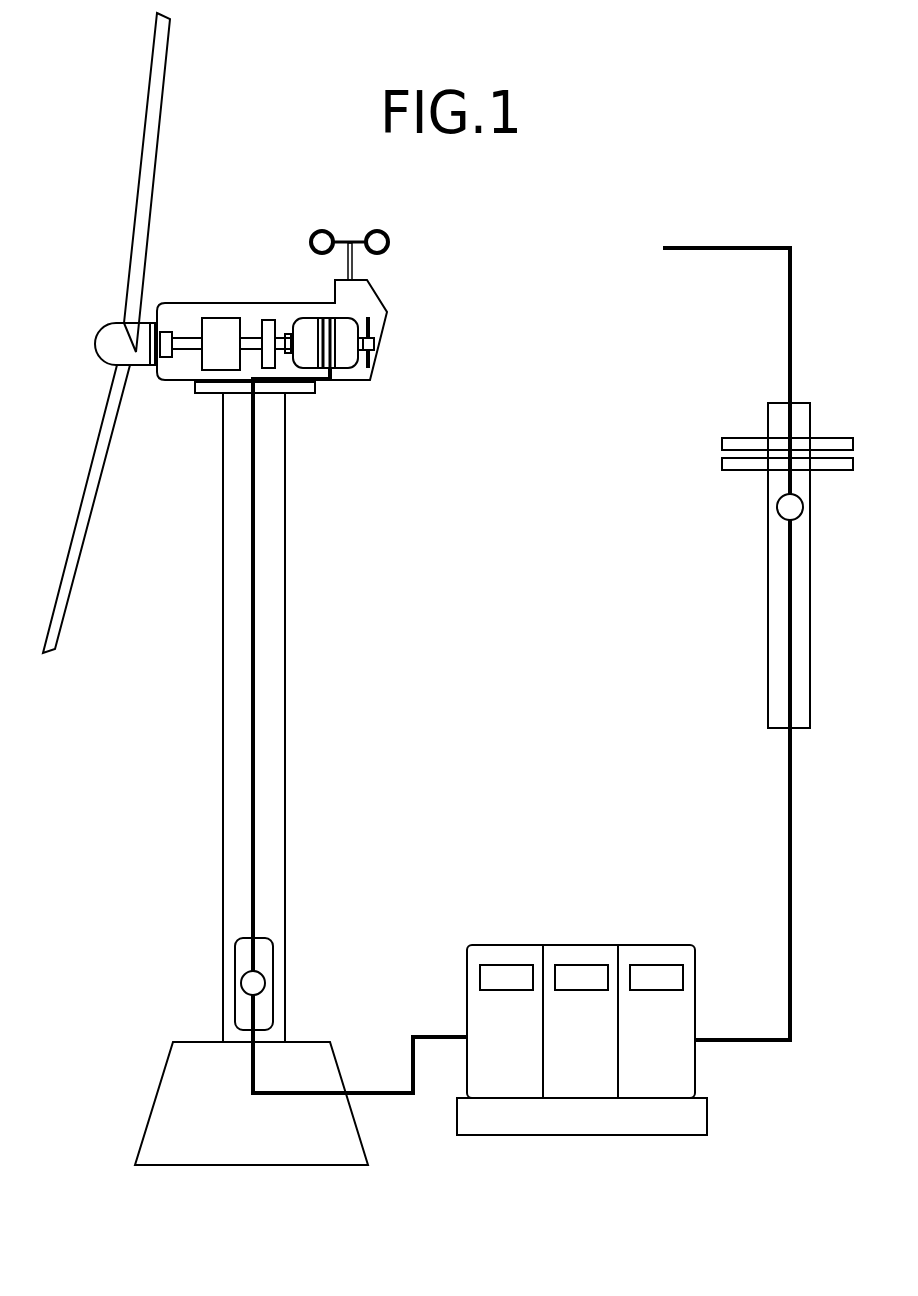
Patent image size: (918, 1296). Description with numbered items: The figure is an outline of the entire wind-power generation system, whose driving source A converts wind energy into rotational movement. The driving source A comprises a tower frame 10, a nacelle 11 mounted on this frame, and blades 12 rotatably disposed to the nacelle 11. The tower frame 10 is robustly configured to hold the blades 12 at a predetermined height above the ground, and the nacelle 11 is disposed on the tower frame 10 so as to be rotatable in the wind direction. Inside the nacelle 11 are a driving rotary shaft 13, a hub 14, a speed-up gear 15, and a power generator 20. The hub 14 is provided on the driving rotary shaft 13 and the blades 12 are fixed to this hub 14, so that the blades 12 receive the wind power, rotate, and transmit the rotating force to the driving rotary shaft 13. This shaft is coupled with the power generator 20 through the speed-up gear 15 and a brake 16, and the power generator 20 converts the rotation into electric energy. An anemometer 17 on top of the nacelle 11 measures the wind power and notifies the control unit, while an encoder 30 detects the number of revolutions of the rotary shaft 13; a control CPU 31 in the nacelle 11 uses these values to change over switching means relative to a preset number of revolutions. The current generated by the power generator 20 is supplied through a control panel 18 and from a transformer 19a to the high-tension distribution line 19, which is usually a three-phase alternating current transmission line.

The tower frame 10 is at (270, 660).
The nacelle 11 is at (337, 387).
The blades 12 is at (148, 185).
The driving rotary shaft 13 is at (182, 337).
The hub 14 is at (112, 335).
The speed-up gear 15 is at (216, 370).
The brake 16 is at (268, 323).
The anemometer 17 is at (383, 229).
The control panel 18 is at (267, 955).
The high-tension distribution line 19 is at (788, 880).
The transformer 19a is at (562, 945).
The power generator 20 is at (343, 361).
The encoder 30 is at (372, 326).
The control CPU 31 is at (360, 730).
The driving source A is at (346, 511).